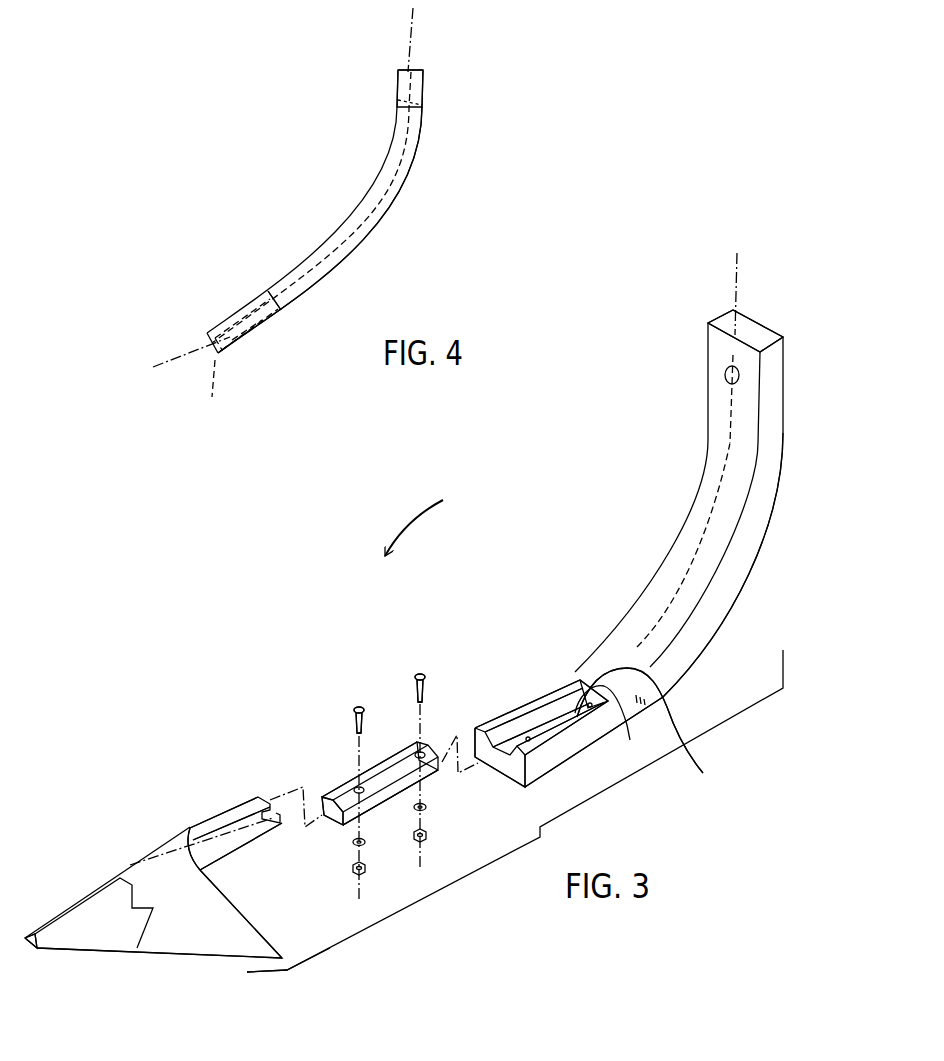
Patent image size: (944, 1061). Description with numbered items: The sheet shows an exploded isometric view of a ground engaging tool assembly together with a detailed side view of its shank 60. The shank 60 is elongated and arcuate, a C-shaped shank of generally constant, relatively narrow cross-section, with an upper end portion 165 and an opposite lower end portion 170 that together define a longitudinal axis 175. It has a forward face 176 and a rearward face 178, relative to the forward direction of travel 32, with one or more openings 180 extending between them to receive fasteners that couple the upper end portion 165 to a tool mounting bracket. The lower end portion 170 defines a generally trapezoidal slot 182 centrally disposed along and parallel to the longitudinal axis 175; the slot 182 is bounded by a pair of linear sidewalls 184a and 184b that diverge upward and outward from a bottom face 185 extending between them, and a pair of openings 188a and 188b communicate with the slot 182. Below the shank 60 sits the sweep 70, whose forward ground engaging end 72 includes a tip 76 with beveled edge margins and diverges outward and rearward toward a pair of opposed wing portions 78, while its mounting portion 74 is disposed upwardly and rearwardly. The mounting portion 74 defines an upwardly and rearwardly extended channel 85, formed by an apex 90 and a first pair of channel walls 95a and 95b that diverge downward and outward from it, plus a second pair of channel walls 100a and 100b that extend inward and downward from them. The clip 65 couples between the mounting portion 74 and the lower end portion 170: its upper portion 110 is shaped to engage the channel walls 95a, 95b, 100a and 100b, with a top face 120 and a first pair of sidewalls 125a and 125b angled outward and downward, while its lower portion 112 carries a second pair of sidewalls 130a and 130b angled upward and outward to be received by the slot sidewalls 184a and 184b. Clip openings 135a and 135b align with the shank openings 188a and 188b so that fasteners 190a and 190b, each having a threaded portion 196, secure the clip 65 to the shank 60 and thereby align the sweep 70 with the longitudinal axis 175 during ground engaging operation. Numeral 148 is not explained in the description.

In FIG. 3, the forward direction of travel 32 is at (426, 516).
In FIG. 3, the shank 60 is at (776, 536).
In FIG. 3, the clip 65 is at (387, 722).
In FIG. 3, the sweep 70 is at (114, 736).
In FIG. 3, the ground engaging end 72 is at (82, 965).
In FIG. 3, the mounting portion 74 is at (254, 848).
In FIG. 3, the tip 76 is at (36, 933).
In FIG. 3, the wing portions 78 is at (271, 972).
In FIG. 3, the channel 85 is at (285, 797).
In FIG. 3, the apex 90 is at (242, 798).
In FIG. 3, the first channel wall 95a is at (212, 826).
In FIG. 3, the first channel wall 95b is at (218, 852).
In FIG. 3, the second channel wall 100a is at (270, 796).
In FIG. 3, the second channel wall 100b is at (287, 820).
In FIG. 3, the upper portion of clip 110 is at (333, 782).
In FIG. 3, the lower portion of clip 112 is at (330, 830).
In FIG. 3, the top face 120 is at (390, 770).
In FIG. 3, the first sidewall of clip 125a is at (312, 807).
In FIG. 3, the first sidewall of clip 125b is at (388, 792).
In FIG. 3, the second sidewall of clip 130a is at (303, 827).
In FIG. 3, the second sidewall of clip 130b is at (355, 840).
In FIG. 3, the clip opening 135a is at (426, 770).
In FIG. 3, the clip opening 135b is at (366, 828).
In FIG. 3, the screw 148 is at (360, 705).
In FIG. 4, the upper end portion 165 is at (436, 83).
In FIG. 3, the upper end portion 165 is at (810, 357).
In FIG. 4, the lower end portion 170 is at (283, 357).
In FIG. 3, the lower end portion 170 is at (520, 660).
In FIG. 4, the longitudinal axis 175 is at (157, 355).
In FIG. 3, the longitudinal axis 175 is at (744, 272).
In FIG. 4, the forward face 176 is at (396, 78).
In FIG. 3, the forward face 176 is at (725, 415).
In FIG. 4, the rearward face 178 is at (414, 142).
In FIG. 3, the rearward face 178 is at (786, 410).
In FIG. 4, the openings 180 is at (392, 127).
In FIG. 3, the openings 180 is at (722, 375).
In FIG. 4, the slot 182 is at (223, 314).
In FIG. 3, the slot 182 is at (550, 712).
In FIG. 3, the slot sidewall 184a is at (570, 693).
In FIG. 3, the slot sidewall 184b is at (663, 726).
In FIG. 4, the bottom face of slot 185 is at (248, 287).
In FIG. 3, the bottom face of slot 185 is at (570, 713).
In FIG. 4, the shank opening 188a is at (305, 323).
In FIG. 3, the shank opening 188a is at (617, 730).
In FIG. 4, the shank opening 188b is at (228, 398).
In FIG. 3, the shank opening 188b is at (526, 737).
In FIG. 3, the fastener 190a is at (434, 681).
In FIG. 3, the fastener 190b is at (343, 723).
In FIG. 3, the threaded portion 196 is at (361, 731).